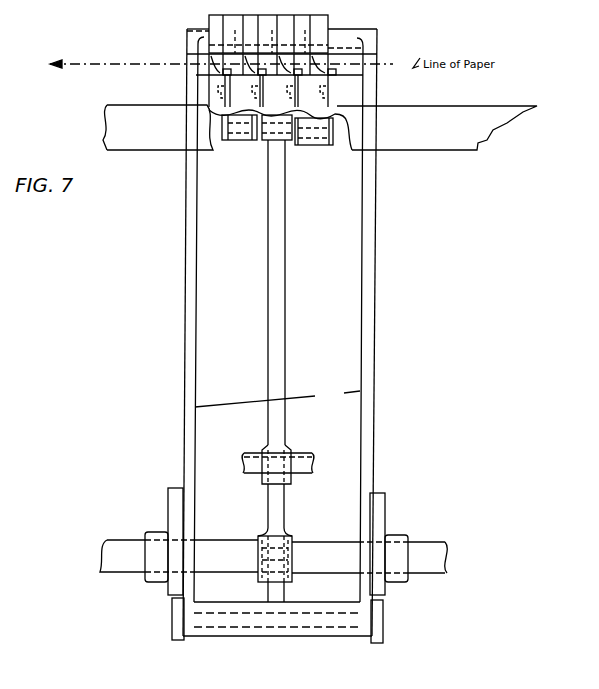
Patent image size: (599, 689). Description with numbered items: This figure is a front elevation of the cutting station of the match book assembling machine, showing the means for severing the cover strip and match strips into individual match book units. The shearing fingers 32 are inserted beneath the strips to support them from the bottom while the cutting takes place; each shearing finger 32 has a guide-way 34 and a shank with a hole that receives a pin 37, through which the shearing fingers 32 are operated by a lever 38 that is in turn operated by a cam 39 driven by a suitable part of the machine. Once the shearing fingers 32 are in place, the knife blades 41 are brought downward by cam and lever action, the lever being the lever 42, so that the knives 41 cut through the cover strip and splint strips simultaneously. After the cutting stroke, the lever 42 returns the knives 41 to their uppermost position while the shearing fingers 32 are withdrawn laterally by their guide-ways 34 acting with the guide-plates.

The shearing fingers 32 is at (337, 77).
The guide-way 34 is at (337, 101).
The pin 37 is at (243, 128).
The lever 38 is at (285, 318).
The cam 39 is at (272, 512).
The knife blades 41 is at (224, 34).
The lever 42 is at (277, 396).